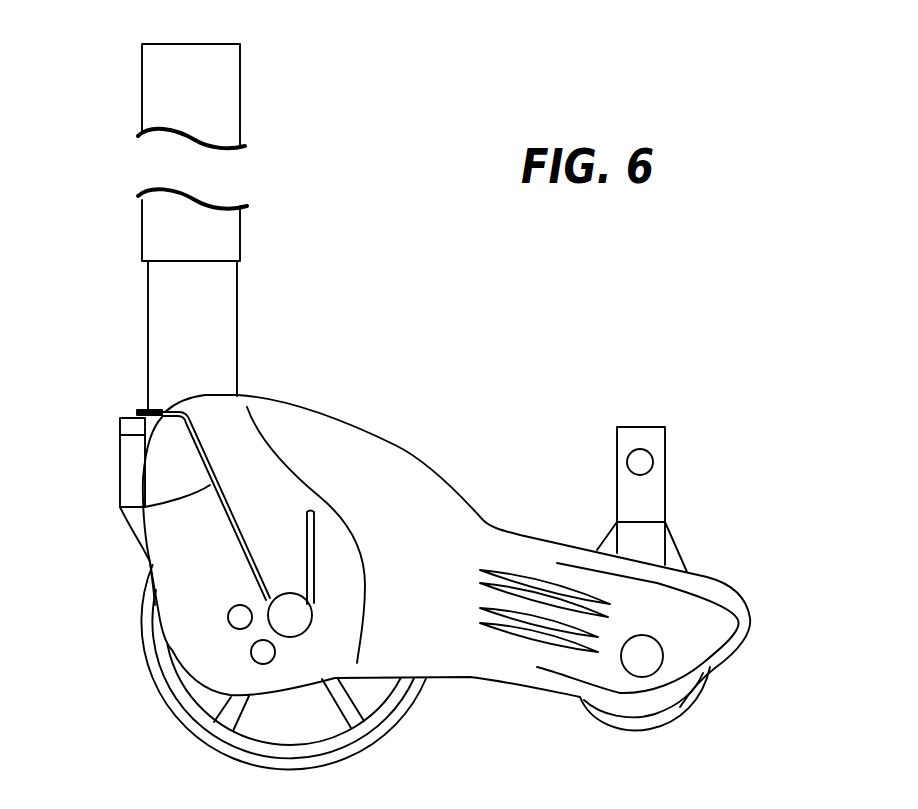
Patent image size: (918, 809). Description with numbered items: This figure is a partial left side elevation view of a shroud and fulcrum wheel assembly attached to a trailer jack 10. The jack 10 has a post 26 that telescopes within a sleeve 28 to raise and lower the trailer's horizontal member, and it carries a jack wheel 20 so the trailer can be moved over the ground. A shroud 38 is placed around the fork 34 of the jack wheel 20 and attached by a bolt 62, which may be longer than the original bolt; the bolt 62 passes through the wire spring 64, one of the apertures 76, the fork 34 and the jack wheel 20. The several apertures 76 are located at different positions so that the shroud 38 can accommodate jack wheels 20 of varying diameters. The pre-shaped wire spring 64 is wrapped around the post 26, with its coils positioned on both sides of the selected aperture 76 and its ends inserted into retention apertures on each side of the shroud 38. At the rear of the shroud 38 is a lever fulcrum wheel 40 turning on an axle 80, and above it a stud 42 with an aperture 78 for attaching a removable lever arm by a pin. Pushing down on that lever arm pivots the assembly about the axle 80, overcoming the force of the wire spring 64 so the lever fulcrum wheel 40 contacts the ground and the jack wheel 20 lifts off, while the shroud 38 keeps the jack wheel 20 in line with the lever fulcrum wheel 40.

The jack 10 is at (285, 193).
The jack wheel 20 is at (268, 728).
The post 26 is at (226, 329).
The sleeve 28 is at (234, 109).
The fork 34 is at (130, 466).
The shroud 38 is at (427, 502).
The lever fulcrum wheel 40 is at (642, 730).
The stud 42 is at (645, 505).
The bolt 62 is at (300, 622).
The wire spring 64 is at (120, 507).
The apertures 76 is at (260, 655).
The aperture 78 is at (643, 462).
The axle 80 is at (647, 657).